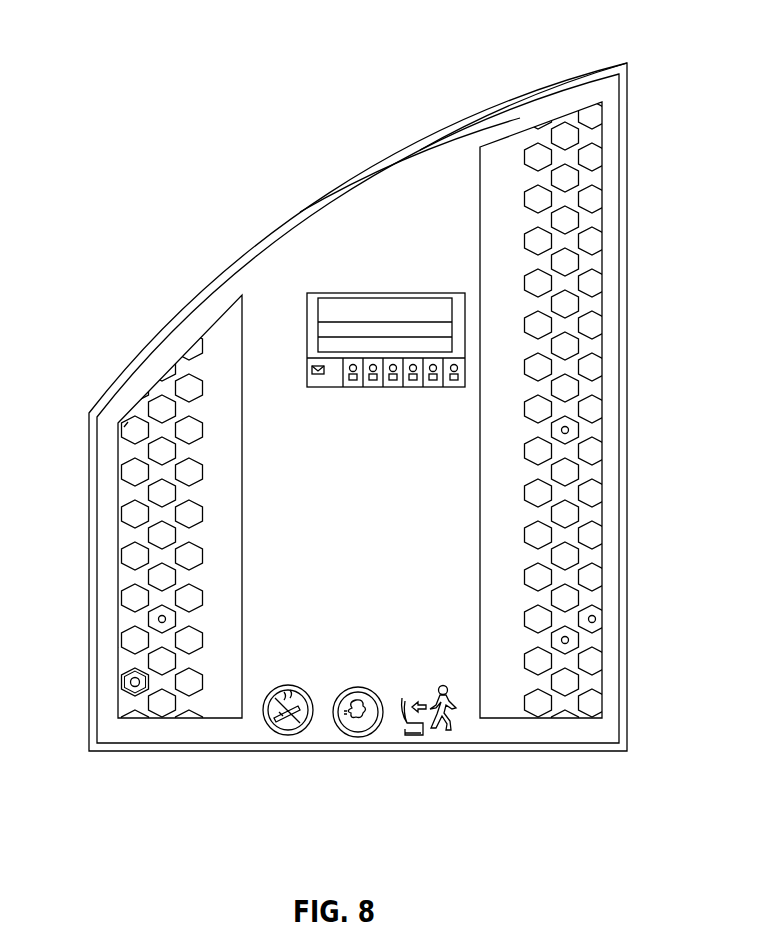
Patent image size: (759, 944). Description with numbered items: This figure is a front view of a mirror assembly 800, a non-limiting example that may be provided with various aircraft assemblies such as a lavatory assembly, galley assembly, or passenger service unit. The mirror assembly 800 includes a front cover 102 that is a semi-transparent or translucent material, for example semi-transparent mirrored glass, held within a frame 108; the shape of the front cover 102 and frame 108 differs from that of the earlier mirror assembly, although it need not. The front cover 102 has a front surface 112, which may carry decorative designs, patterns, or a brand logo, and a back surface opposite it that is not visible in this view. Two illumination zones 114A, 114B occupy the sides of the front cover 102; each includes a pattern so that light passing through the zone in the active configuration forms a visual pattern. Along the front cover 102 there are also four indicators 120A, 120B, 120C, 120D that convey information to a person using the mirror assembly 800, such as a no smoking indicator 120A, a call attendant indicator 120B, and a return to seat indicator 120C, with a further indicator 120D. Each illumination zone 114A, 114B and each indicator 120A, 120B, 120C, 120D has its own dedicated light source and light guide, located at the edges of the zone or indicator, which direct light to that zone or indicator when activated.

The mirror assembly 800 is at (662, 38).
The front cover 102 is at (363, 212).
The front surface 112 is at (423, 158).
The frame 108 is at (529, 90).
The illumination zone 114A is at (132, 523).
The illumination zone 114B is at (578, 248).
The no smoking indicator 120A is at (282, 735).
The call attendant indicator 120B is at (358, 737).
The return to seat indicator 120C is at (436, 735).
The indicator 120D is at (333, 297).